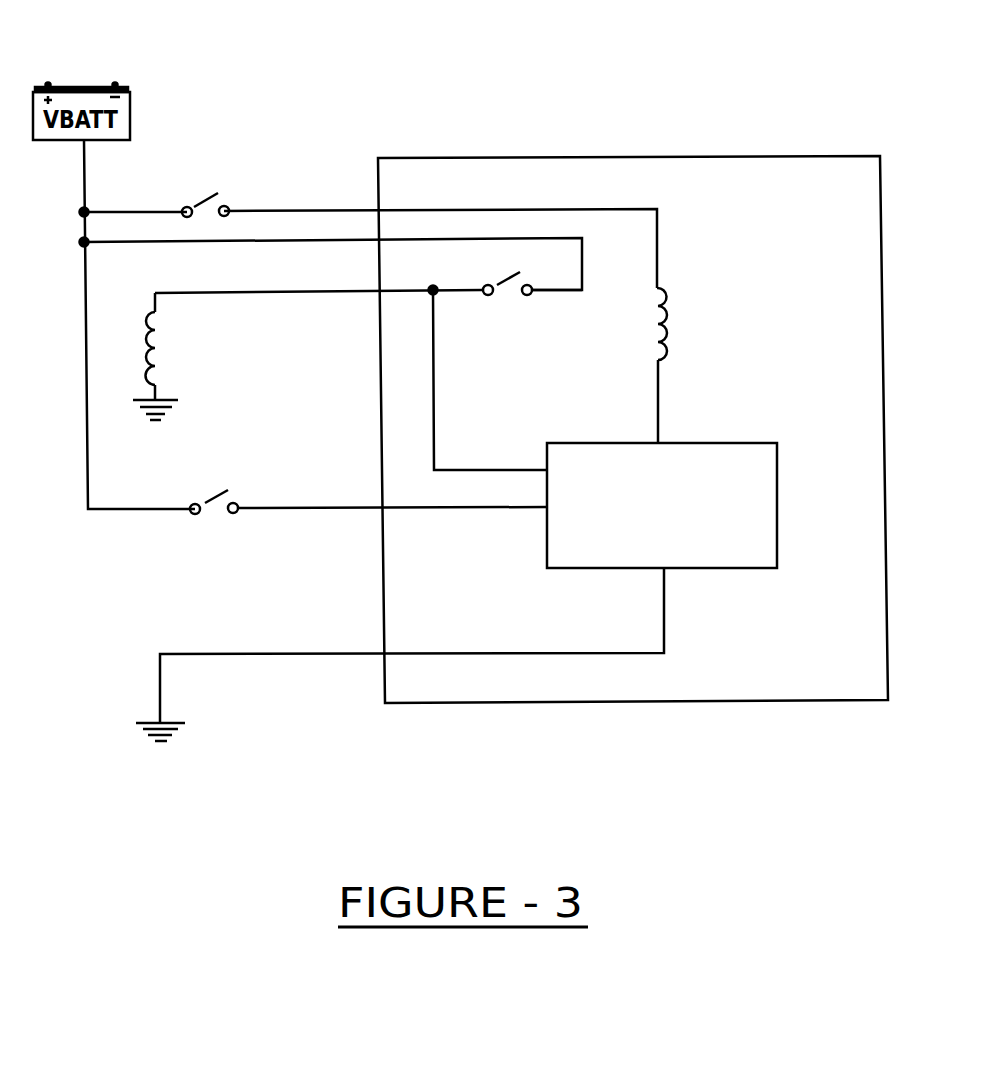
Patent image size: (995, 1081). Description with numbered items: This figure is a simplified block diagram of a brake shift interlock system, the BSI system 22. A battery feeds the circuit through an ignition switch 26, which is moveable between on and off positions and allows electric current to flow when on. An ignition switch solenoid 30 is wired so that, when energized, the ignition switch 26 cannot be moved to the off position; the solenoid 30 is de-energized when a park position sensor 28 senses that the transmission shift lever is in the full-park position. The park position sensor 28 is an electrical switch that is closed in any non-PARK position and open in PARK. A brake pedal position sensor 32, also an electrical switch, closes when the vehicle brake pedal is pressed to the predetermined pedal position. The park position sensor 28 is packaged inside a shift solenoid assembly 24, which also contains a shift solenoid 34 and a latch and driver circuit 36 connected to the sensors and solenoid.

The BSI system 22 is at (285, 38).
The shift solenoid assembly 24 is at (792, 152).
The ignition switch 26 is at (200, 200).
The park position sensor 28 is at (503, 293).
The ignition switch solenoid 30 is at (147, 320).
The brake pedal position sensor 32 is at (213, 503).
The shift solenoid 34 is at (672, 295).
The latch and driver circuit 36 is at (740, 568).